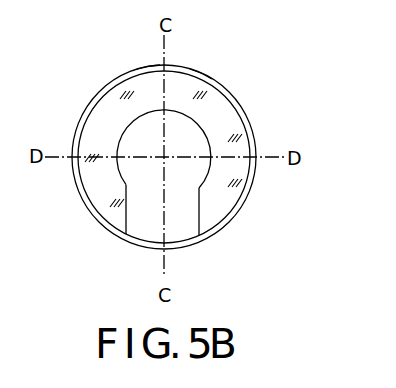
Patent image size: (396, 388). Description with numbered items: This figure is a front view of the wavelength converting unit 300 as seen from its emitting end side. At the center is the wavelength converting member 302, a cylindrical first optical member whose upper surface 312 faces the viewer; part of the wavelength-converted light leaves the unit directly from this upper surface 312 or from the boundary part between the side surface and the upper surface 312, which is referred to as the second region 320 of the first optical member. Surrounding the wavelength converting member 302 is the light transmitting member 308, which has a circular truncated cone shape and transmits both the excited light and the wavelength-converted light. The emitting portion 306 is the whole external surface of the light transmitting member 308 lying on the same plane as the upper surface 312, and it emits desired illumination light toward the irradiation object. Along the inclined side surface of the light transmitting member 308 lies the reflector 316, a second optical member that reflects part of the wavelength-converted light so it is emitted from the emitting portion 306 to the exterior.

The wavelength converting unit 300 is at (260, 71).
The wavelength converting member 302 is at (218, 196).
The emitting portion 306 is at (244, 125).
The light transmitting member 308 is at (137, 69).
The upper surface 312 is at (122, 178).
The reflector 316 is at (212, 79).
The second region 320 is at (124, 132).